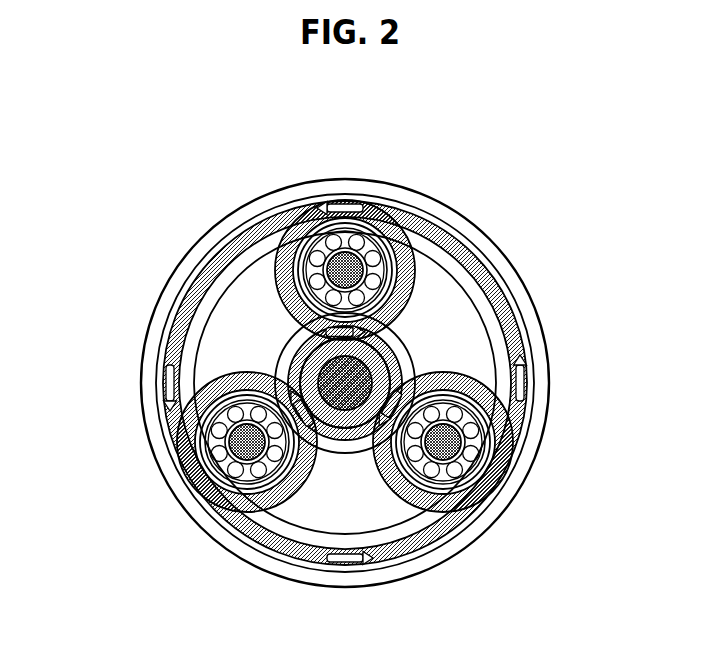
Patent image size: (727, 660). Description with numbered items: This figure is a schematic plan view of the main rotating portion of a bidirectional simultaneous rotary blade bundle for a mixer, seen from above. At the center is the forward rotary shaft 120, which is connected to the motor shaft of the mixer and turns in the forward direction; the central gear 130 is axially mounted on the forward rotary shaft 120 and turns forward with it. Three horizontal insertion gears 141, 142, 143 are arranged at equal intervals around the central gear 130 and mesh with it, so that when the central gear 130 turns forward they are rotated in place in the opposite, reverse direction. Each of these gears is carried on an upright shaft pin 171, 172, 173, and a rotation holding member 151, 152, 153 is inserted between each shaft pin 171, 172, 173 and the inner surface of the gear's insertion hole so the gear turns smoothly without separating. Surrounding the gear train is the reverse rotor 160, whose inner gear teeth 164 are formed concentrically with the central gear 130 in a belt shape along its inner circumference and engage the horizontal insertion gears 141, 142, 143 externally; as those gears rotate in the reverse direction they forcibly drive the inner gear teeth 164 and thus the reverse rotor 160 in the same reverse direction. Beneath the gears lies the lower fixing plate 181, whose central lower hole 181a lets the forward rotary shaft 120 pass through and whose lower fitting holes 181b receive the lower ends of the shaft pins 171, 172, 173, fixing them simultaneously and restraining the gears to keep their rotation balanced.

The forward rotary shaft 120 is at (400, 335).
The central gear 130 is at (353, 380).
The horizontal insertion gear 141 is at (182, 415).
The horizontal insertion gear 142 is at (498, 400).
The horizontal insertion gear 143 is at (392, 224).
The rotation holding member 151 is at (210, 442).
The rotation holding member 152 is at (483, 428).
The rotation holding member 153 is at (388, 252).
The reverse rotor 160 is at (146, 325).
The inner gear teeth 164 is at (213, 283).
The shaft pin 171 is at (250, 458).
The shaft pin 172 is at (462, 476).
The shaft pin 173 is at (390, 297).
The lower fixing plate 181 is at (378, 508).
The lower hole 181a is at (348, 458).
The lower fitting hole 181b is at (313, 243).